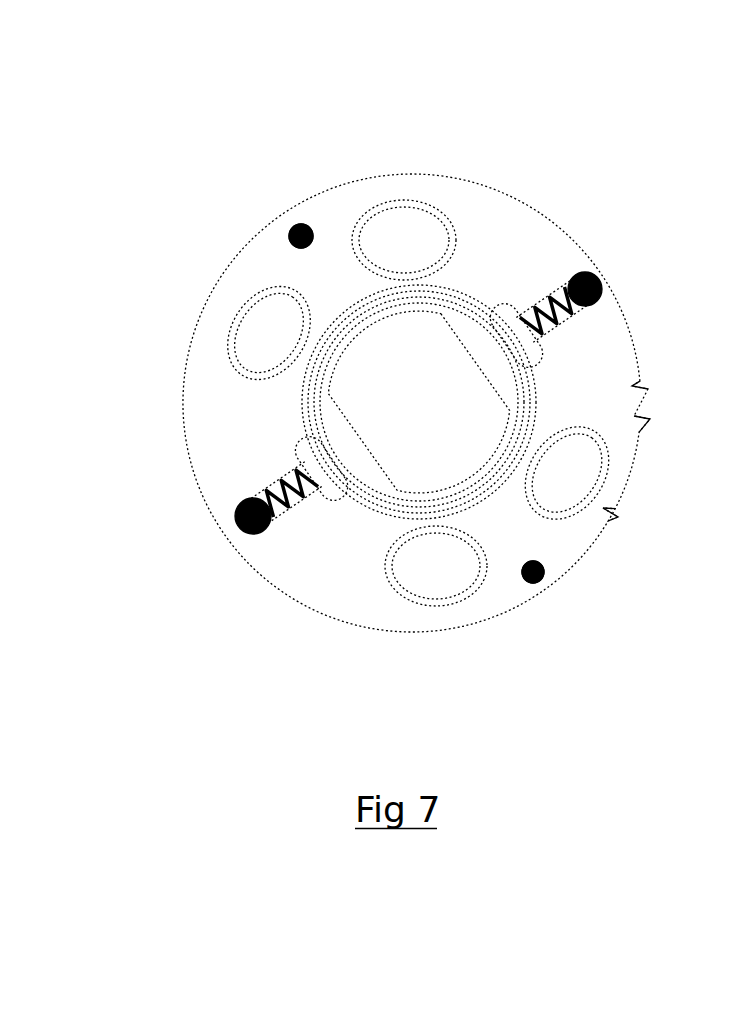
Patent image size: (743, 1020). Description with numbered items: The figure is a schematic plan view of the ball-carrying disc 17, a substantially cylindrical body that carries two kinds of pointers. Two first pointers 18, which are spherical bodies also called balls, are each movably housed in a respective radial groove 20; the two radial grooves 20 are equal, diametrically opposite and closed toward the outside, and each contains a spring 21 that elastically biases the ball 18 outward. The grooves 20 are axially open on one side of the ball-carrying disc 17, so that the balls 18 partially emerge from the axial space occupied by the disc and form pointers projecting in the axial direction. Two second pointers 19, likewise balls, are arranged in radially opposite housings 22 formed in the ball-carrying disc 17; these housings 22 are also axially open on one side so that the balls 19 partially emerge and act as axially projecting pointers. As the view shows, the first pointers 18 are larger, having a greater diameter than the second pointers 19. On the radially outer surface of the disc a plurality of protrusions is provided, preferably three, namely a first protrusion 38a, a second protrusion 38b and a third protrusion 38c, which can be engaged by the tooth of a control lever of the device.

The ball-carrying disc 17 is at (437, 175).
The first pointer 18 is at (596, 276).
The second pointer 19 is at (290, 230).
The radial groove 20 is at (556, 331).
The spring 21 is at (543, 295).
The housing 22 is at (294, 251).
The first protrusion 38a is at (618, 518).
The second protrusion 38b is at (651, 428).
The third protrusion 38c is at (650, 390).